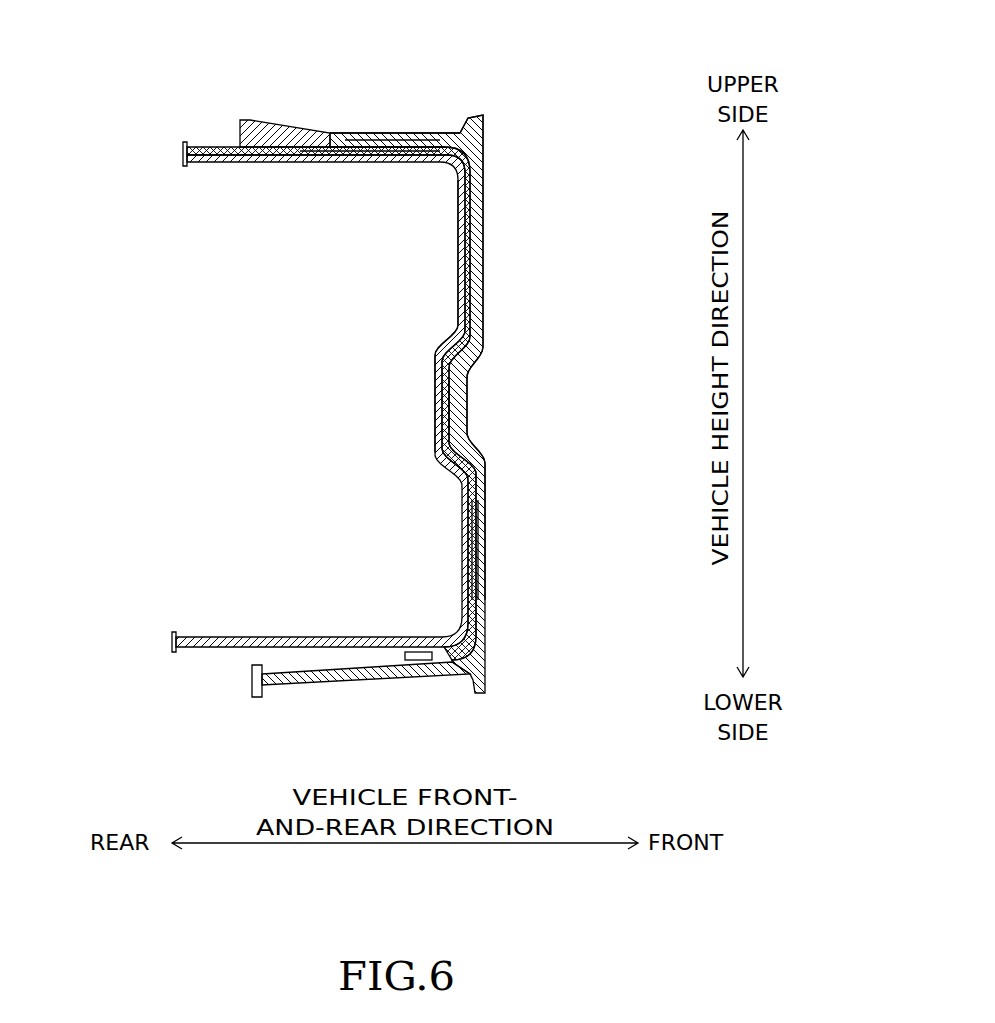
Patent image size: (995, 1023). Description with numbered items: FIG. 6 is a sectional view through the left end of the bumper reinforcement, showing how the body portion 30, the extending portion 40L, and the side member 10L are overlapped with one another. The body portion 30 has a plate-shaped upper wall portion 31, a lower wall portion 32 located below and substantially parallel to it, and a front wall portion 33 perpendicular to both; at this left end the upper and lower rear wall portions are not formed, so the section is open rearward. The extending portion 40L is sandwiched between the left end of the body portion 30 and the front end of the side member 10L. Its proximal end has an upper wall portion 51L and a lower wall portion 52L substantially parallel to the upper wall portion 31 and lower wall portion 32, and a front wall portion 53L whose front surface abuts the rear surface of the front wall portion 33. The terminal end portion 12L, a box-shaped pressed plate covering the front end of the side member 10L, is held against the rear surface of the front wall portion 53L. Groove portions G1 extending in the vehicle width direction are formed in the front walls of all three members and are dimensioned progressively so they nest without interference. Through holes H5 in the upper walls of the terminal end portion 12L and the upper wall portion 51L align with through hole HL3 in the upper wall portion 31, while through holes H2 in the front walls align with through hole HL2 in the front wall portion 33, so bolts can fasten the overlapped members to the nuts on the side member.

The body portion 30 is at (437, 357).
The side member 10L is at (320, 397).
The extending portion 40L is at (409, 356).
The upper wall portion 31 is at (427, 132).
The lower wall portion 32 is at (350, 678).
The front wall portion 33 is at (485, 270).
The terminal end portion 12L is at (458, 240).
The upper wall portion 51L is at (402, 133).
The lower wall portion 52L is at (430, 662).
The front wall portion 53L is at (485, 190).
The through hole H5 is at (353, 192).
The through hole HL3 is at (365, 130).
The groove portion G1 is at (525, 410).
The through hole H2 is at (555, 566).
The through hole HL2 is at (485, 528).